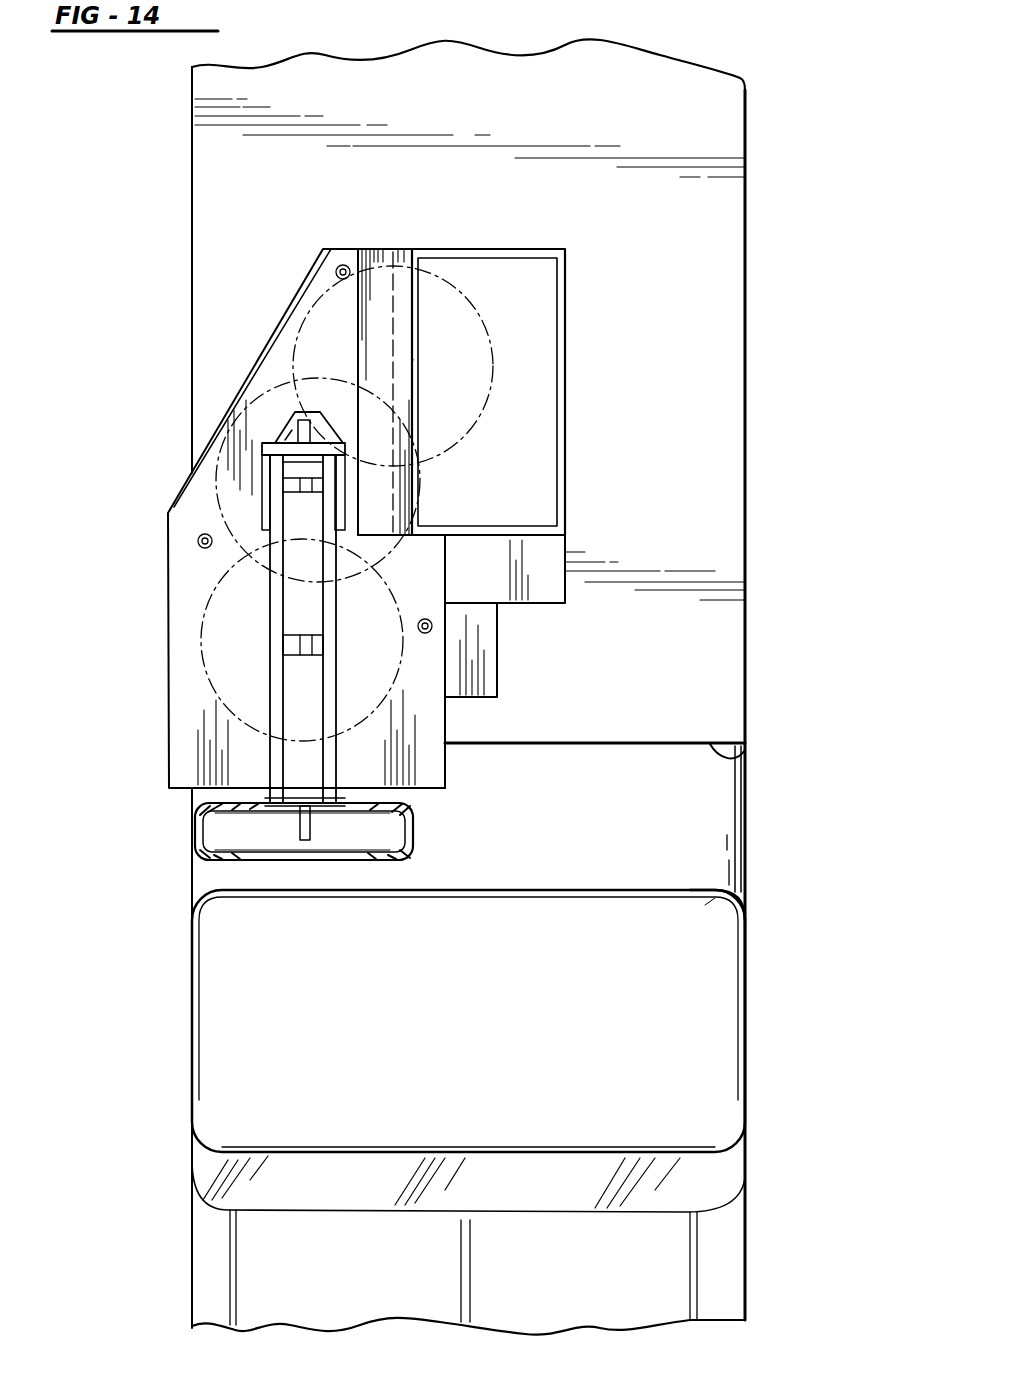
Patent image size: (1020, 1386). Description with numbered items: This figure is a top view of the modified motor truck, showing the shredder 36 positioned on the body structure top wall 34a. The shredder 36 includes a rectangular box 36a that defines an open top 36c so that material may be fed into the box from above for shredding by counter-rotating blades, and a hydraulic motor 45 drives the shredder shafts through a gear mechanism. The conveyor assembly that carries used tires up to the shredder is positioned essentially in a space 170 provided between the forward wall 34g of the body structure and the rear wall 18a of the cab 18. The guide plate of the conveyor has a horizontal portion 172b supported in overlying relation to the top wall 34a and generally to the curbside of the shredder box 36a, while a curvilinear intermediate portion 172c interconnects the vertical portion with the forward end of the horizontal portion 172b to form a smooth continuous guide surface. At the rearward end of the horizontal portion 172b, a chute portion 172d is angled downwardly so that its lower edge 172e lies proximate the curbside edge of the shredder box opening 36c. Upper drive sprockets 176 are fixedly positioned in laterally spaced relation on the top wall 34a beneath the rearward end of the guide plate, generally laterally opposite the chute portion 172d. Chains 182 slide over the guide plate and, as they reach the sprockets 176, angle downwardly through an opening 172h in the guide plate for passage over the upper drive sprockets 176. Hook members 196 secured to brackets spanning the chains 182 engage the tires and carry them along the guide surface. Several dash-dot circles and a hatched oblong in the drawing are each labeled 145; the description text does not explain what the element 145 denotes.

The cab 18 is at (198, 1048).
The rear wall of cab 18a is at (720, 884).
The body structure top wall 34a is at (686, 697).
The forward wall of body structure 34g is at (745, 757).
The shredder 36 is at (556, 359).
The box 36a is at (567, 328).
The open top 36c is at (510, 286).
The hydraulic motor 45 is at (490, 655).
The fastener location 145 is at (438, 462).
The space 170 is at (680, 818).
The horizontal portion 172b is at (188, 592).
The curvilinear intermediate portion 172c is at (435, 773).
The chute portion 172d is at (408, 262).
The lower edge 172e is at (413, 358).
The opening 172h is at (290, 435).
The upper drive sprockets 176 is at (345, 440).
The chains 182 is at (275, 620).
The hook member 196 is at (310, 825).